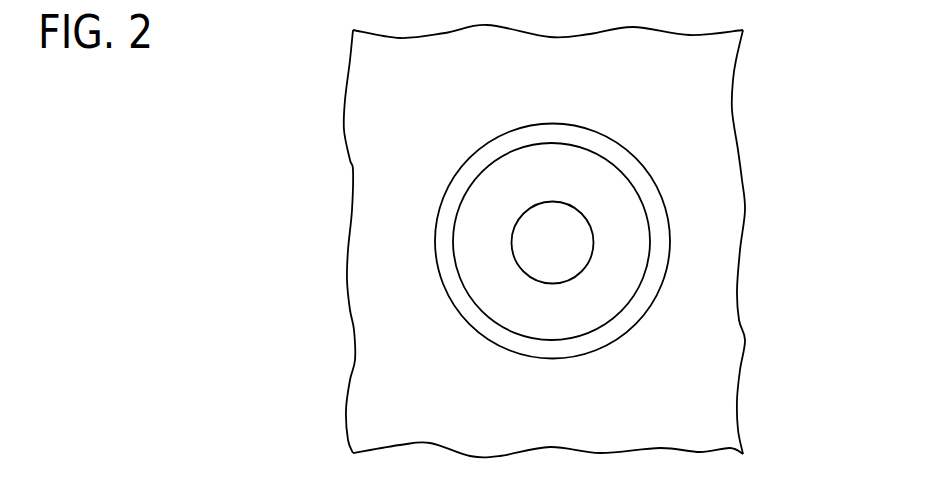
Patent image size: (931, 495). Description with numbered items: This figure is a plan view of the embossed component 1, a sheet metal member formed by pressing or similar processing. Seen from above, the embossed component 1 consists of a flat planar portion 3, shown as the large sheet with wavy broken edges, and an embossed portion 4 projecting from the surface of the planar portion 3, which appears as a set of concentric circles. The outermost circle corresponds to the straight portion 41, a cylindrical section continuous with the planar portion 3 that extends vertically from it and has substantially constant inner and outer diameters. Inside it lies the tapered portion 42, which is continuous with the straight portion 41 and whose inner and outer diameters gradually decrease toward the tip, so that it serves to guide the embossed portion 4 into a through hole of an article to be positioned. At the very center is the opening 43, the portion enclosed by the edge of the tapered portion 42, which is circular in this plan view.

The embossed component 1 is at (812, 48).
The planar portion 3 is at (705, 157).
The embossed portion 4 is at (564, 217).
The straight portion 41 is at (665, 288).
The tapered portion 42 is at (613, 295).
The opening 43 is at (513, 245).